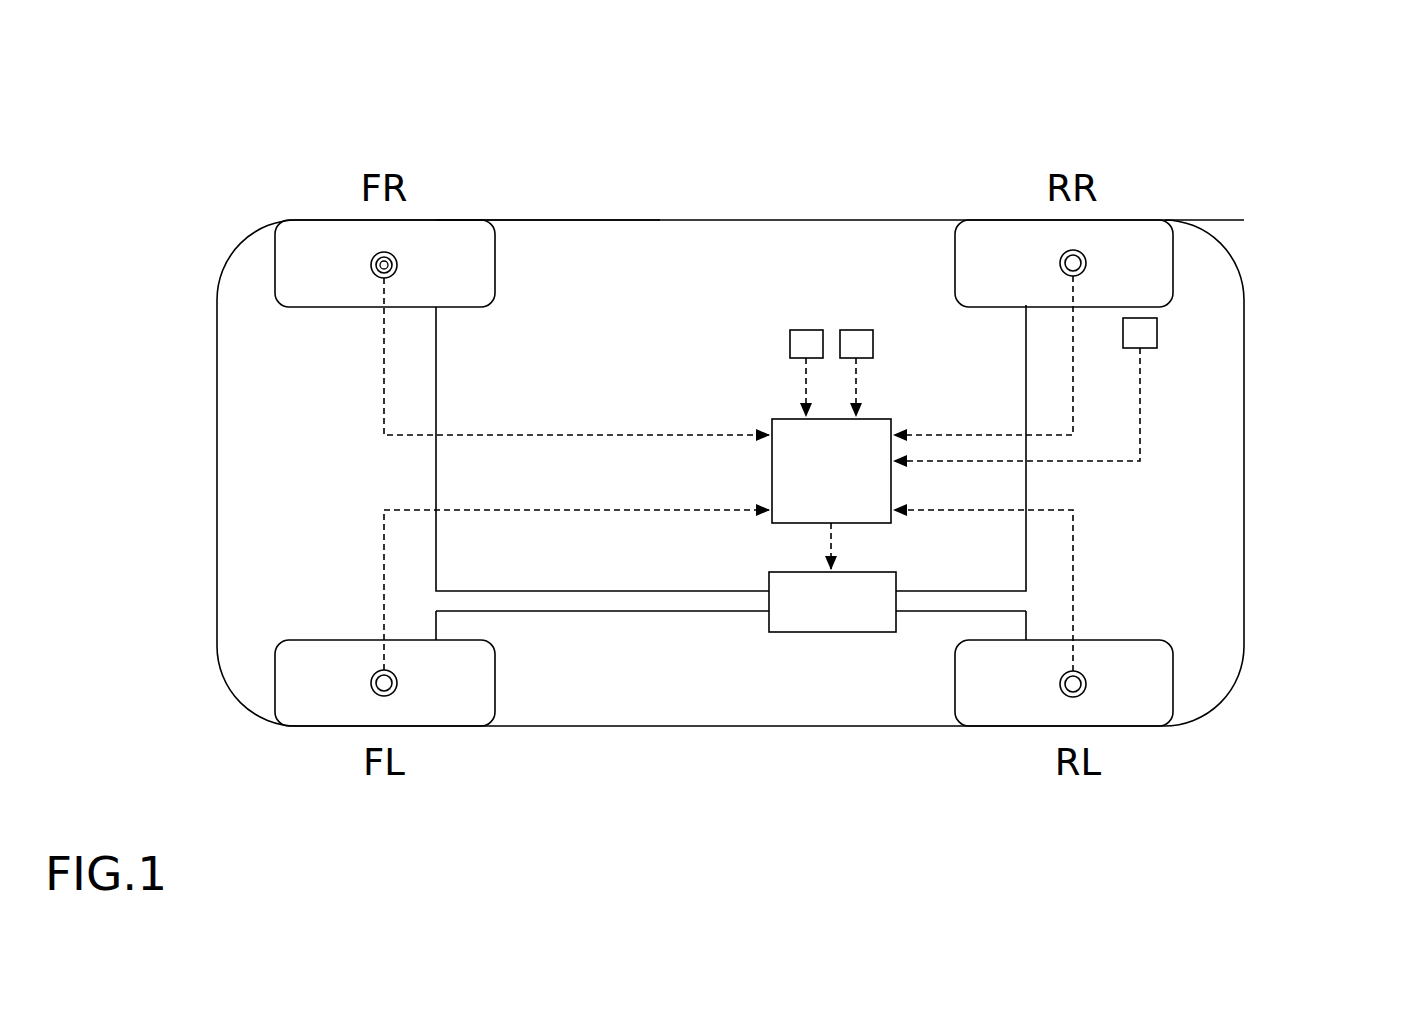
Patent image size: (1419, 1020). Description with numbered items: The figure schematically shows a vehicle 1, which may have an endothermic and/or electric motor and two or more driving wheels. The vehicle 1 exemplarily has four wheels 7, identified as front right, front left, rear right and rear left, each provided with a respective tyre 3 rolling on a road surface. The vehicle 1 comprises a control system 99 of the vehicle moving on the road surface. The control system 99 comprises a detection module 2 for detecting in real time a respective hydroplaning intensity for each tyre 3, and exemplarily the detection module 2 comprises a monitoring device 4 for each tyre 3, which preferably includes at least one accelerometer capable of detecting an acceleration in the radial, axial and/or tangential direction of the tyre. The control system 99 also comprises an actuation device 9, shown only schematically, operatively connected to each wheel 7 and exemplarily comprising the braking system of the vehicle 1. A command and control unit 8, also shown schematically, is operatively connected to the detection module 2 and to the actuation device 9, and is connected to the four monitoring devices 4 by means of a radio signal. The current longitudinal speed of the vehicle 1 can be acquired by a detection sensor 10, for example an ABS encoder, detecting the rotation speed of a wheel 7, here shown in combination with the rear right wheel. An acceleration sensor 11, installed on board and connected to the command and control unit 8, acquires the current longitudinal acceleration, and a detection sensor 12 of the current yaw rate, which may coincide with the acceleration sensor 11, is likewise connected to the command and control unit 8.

The vehicle 1 is at (1332, 131).
The control system 99 is at (1202, 203).
The wheel 7 is at (474, 208).
The tyre 3 is at (297, 277).
The detection module 2 is at (363, 264).
The monitoring device 4 is at (386, 263).
The command and control unit 8 is at (831, 471).
The actuation device 9 is at (832, 602).
The detection sensor 10 is at (1160, 334).
The acceleration sensor 11 is at (805, 327).
The detection sensor 12 is at (857, 327).